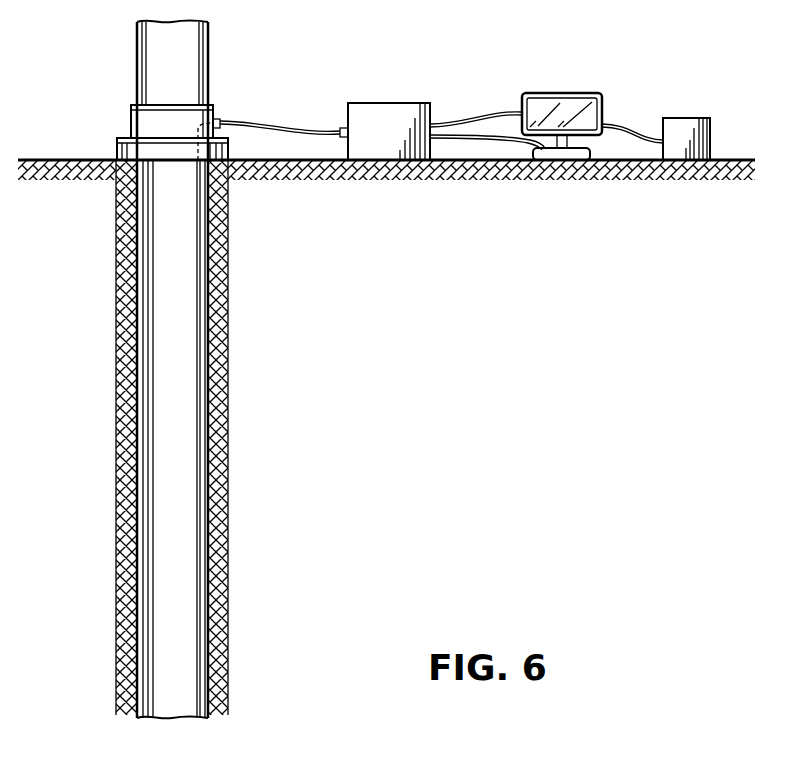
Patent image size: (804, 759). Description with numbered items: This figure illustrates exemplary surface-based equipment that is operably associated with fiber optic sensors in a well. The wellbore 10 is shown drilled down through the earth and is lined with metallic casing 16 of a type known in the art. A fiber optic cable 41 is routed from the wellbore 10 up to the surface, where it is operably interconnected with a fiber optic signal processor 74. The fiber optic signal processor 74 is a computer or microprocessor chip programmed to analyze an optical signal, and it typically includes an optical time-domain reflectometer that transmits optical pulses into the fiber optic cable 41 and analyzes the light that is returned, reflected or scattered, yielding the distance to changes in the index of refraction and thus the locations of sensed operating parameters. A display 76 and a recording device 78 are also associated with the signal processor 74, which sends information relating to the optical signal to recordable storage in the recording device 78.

The wellbore 10 is at (137, 425).
The metallic casing 16 is at (206, 375).
The fiber optic cable 41 is at (198, 284).
The fiber optic signal processor 74 is at (388, 103).
The display 76 is at (560, 93).
The recording device 78 is at (685, 118).